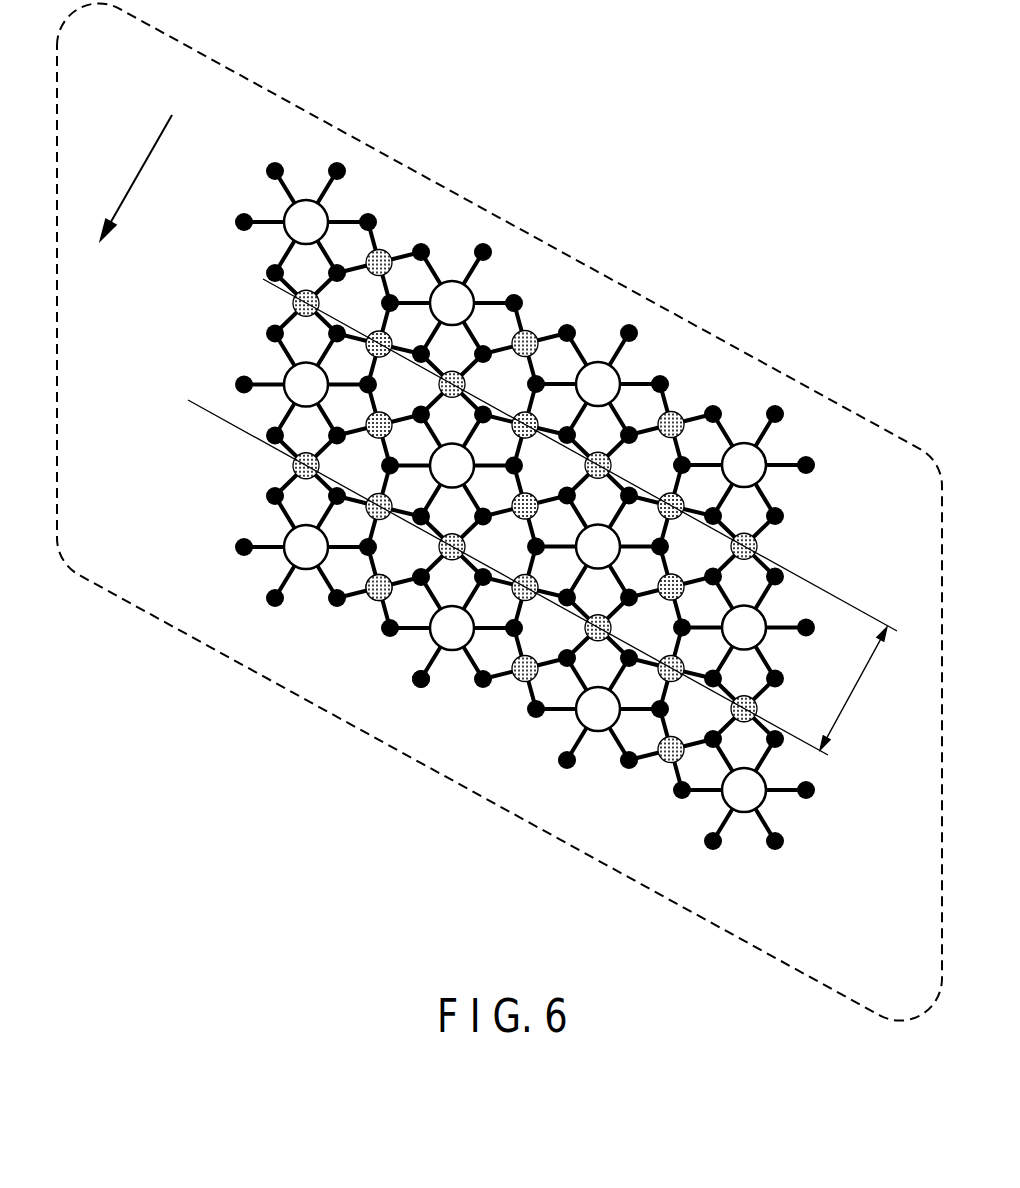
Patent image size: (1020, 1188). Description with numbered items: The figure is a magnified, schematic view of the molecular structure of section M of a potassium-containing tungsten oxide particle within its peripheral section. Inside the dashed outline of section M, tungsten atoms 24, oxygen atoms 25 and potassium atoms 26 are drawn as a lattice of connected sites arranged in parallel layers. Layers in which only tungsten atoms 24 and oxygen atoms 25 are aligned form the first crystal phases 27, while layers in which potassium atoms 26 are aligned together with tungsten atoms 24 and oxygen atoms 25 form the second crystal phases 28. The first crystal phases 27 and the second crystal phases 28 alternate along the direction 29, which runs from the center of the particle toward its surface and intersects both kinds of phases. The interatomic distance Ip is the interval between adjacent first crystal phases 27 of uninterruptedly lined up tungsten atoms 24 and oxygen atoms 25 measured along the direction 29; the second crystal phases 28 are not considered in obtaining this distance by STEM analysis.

The tungsten atom 24 is at (371, 599).
The oxygen atom 25 is at (415, 689).
The potassium atom 26 is at (580, 723).
The first crystal phase 27 is at (450, 505).
The second crystal phase 28 is at (455, 499).
The direction 29 is at (135, 178).
The section M is at (785, 376).
The interatomic distance Ip is at (542, 517).